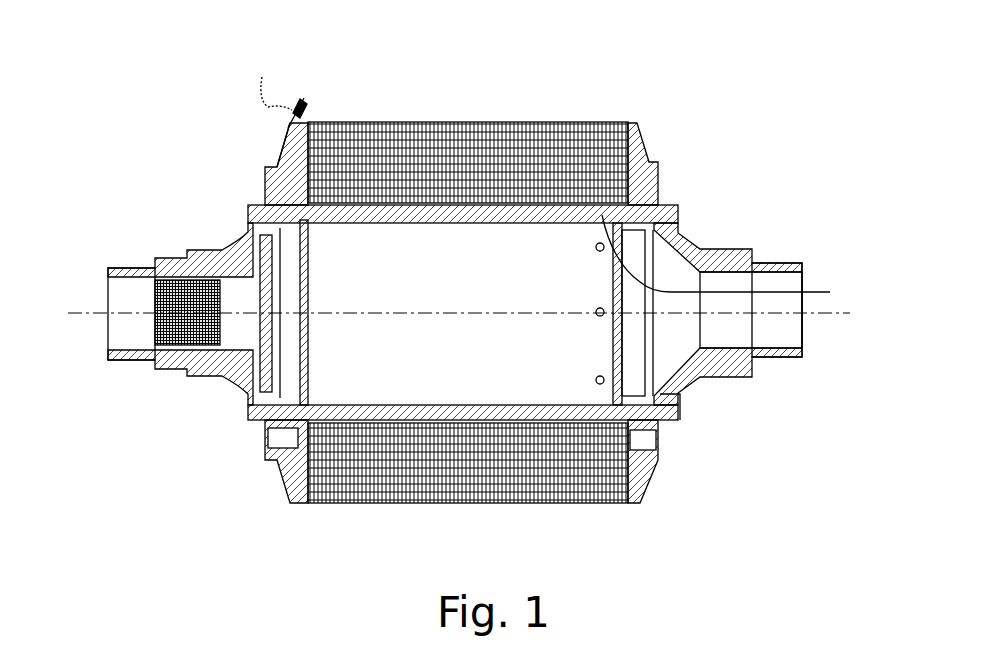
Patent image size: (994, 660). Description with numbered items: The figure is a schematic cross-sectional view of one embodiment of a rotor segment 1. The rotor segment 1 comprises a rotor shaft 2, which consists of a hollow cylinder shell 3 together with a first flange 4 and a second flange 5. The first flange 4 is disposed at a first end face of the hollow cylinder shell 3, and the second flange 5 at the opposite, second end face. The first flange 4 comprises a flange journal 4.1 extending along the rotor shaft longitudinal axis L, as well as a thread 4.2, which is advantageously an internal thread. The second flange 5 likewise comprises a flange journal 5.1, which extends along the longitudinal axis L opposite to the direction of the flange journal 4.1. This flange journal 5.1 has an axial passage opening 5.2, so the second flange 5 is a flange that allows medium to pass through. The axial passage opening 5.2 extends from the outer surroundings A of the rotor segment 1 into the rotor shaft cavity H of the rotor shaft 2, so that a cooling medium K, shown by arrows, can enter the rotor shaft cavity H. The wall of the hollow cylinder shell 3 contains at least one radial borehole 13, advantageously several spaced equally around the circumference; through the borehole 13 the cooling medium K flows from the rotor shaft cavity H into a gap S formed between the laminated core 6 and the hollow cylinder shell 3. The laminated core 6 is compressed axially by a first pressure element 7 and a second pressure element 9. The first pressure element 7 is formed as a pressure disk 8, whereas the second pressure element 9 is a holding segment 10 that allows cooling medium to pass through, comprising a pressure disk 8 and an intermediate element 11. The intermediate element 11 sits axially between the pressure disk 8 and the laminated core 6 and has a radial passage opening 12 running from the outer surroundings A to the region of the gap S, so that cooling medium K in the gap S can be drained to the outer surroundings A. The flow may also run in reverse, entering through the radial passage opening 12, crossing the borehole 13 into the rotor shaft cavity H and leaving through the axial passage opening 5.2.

The rotor segment 1 is at (608, 72).
The rotor shaft 2 is at (760, 168).
The hollow cylinder shell 3 is at (265, 425).
The first flange 4 is at (256, 226).
The flange journal 4.1 is at (115, 266).
The thread 4.2 is at (171, 380).
The second flange 5 is at (683, 220).
The flange journal 5.1 is at (802, 265).
The axial passage opening 5.2 is at (790, 332).
The laminated core 6 is at (462, 118).
The first pressure element 7 is at (645, 143).
The pressure disk 8 is at (268, 160).
The second pressure element 9 is at (264, 124).
The holding segment 10 is at (320, 82).
The intermediate element 11 is at (268, 80).
The radial passage opening 12 is at (262, 208).
The borehole 13 is at (688, 382).
The outer surroundings A is at (530, 32).
The rotor shaft cavity H is at (453, 285).
The cooling medium K is at (832, 290).
The rotor shaft longitudinal axis L is at (79, 318).
The gap S is at (438, 405).